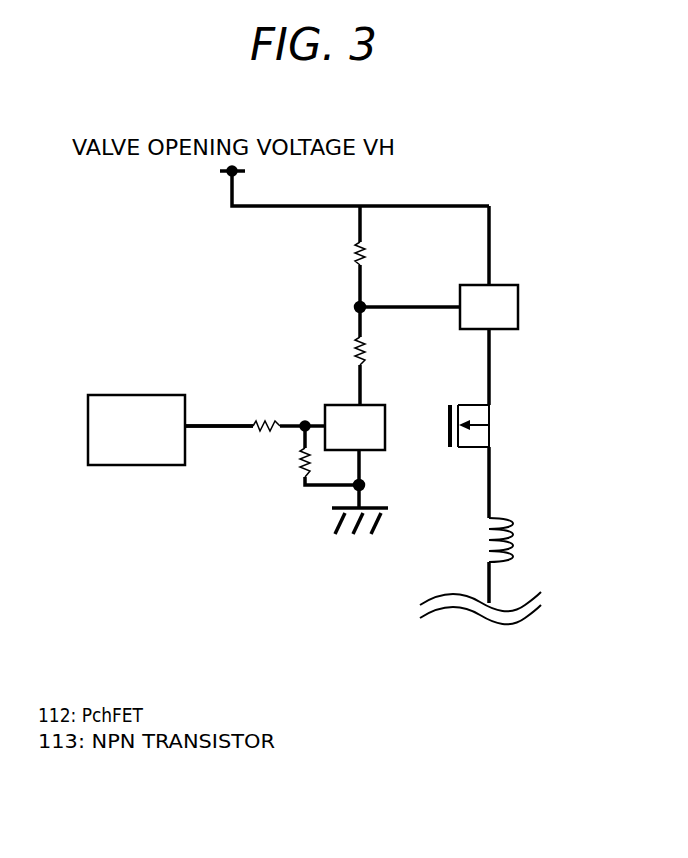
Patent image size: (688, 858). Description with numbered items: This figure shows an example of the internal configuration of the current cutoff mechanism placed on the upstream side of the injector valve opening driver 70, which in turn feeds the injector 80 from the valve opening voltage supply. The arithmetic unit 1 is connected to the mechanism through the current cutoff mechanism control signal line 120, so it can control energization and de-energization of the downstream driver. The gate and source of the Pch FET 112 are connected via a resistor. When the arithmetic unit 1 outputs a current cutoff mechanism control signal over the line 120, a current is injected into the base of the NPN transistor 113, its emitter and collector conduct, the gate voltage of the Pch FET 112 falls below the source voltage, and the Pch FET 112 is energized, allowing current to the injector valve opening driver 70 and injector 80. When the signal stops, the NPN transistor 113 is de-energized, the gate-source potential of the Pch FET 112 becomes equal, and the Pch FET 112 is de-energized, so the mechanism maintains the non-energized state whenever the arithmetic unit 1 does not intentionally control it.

The arithmetic unit 1 is at (127, 410).
The current cutoff mechanism control signal line 120 is at (227, 421).
The NPN transistor 113 is at (335, 438).
The Pch FET 112 is at (501, 300).
The injector valve opening driver 70 is at (494, 423).
The injector 80 is at (504, 538).